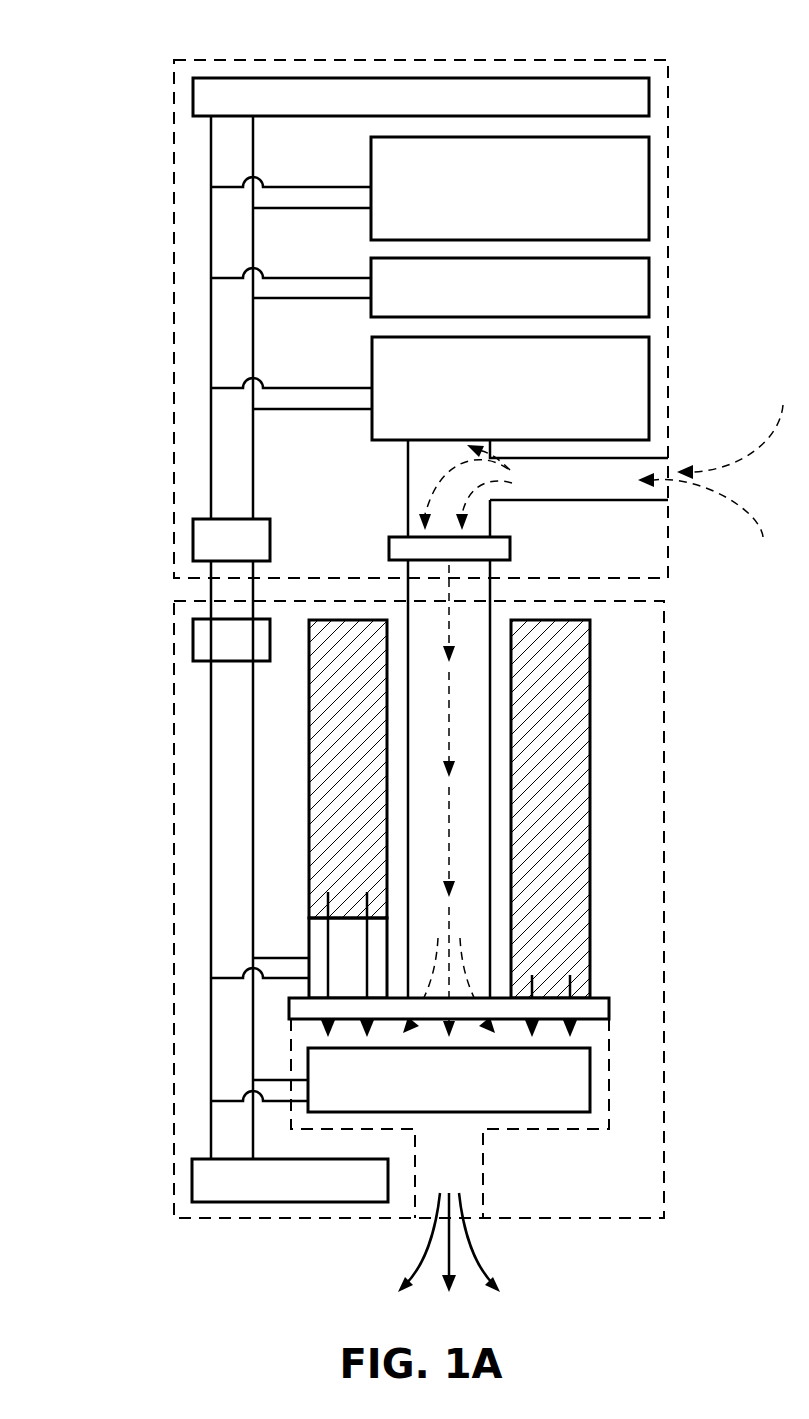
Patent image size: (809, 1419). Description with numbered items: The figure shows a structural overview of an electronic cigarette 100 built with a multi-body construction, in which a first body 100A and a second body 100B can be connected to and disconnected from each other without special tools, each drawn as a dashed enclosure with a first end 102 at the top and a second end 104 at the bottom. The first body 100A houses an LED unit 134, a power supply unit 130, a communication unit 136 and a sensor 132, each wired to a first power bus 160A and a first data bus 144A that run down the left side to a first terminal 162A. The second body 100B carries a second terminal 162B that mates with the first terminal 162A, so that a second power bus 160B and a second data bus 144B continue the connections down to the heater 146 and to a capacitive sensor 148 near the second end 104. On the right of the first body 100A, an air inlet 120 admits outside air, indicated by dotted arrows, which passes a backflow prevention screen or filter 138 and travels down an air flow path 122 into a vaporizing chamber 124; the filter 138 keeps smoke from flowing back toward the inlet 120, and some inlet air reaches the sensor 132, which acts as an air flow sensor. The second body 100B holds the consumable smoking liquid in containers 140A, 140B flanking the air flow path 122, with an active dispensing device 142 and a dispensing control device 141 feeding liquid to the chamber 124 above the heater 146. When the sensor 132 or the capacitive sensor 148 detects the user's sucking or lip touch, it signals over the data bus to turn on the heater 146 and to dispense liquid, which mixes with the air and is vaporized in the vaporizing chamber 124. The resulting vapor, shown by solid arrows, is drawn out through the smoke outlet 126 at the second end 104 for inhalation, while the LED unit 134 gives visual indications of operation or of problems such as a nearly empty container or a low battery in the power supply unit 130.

The electronic cigarette 100 is at (140, 70).
The first body 100A is at (174, 167).
The second body 100B is at (174, 1075).
The first end 102 is at (602, 60).
The second end 104 is at (219, 1218).
The air inlet 120 is at (610, 483).
The air flow path 122 is at (463, 667).
The vaporizing chamber 124 is at (609, 1042).
The smoke outlet 126 is at (467, 1175).
The power supply unit 130 is at (649, 188).
The sensor 132 is at (649, 390).
The LED unit 134 is at (649, 96).
The communication unit 136 is at (649, 290).
The backflow prevention screen or filter 138 is at (510, 548).
The container 140A is at (309, 878).
The container 140B is at (590, 815).
The dispensing control device 141 is at (609, 1010).
The active dispensing device 142 is at (309, 940).
The first data bus 144A is at (253, 335).
The second data bus 144B is at (253, 825).
The heater 146 is at (590, 1080).
The capacitive sensor 148 is at (192, 1180).
The first power bus 160A is at (211, 240).
The second power bus 160B is at (211, 729).
The first terminal 162A is at (193, 539).
The second terminal 162B is at (193, 639).